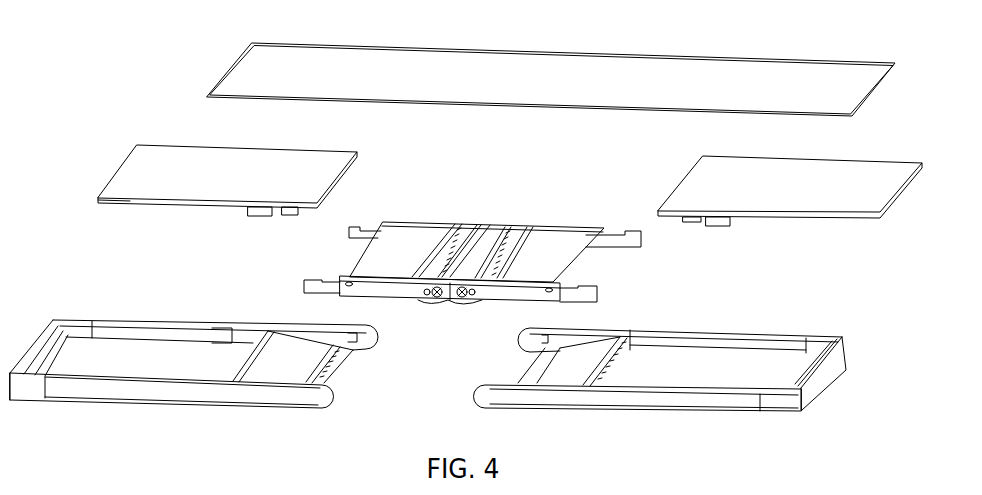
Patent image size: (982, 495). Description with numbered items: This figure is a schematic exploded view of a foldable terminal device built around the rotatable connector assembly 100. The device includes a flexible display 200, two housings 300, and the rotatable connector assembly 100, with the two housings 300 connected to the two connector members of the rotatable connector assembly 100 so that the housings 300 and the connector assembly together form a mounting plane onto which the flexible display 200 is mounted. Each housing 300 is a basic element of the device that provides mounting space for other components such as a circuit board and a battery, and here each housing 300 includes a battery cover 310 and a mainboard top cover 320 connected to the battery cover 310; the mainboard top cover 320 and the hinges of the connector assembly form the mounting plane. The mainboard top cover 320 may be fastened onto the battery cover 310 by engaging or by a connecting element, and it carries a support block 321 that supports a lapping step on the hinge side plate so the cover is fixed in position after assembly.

The rotatable connector assembly 100 is at (493, 214).
The flexible display 200 is at (511, 52).
The housing 300 is at (148, 237).
The battery cover 310 is at (210, 322).
The mainboard top cover 320 is at (510, 206).
The support block 321 is at (716, 228).